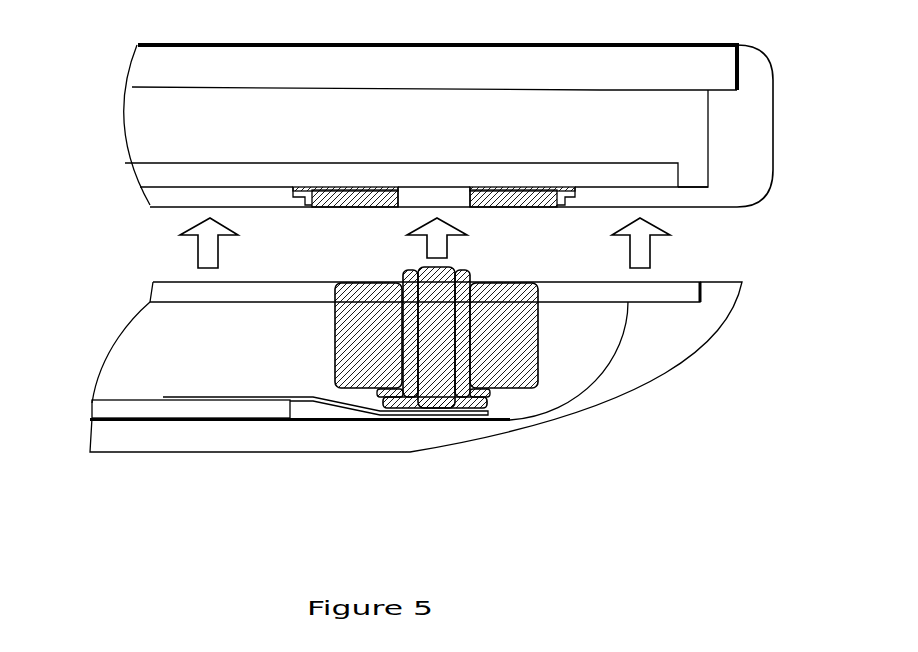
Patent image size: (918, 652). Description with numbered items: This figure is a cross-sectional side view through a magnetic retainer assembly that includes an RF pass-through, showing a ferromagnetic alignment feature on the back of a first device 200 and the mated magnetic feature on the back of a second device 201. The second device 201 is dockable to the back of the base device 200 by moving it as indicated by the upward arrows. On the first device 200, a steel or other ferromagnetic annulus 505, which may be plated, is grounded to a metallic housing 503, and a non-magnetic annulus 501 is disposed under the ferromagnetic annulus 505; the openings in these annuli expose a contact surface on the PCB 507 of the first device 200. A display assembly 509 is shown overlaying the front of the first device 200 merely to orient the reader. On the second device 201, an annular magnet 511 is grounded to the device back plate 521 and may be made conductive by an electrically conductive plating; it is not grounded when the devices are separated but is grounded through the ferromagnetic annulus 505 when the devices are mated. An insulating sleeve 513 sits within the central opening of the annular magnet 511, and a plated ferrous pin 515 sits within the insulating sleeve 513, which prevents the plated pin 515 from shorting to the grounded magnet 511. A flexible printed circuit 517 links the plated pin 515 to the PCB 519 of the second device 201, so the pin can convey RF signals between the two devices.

The first device 200 is at (781, 126).
The second device 201 is at (730, 319).
The non-magnetic annulus 501 is at (542, 190).
The metallic housing 503 is at (150, 202).
The ferromagnetic annulus 505 is at (347, 203).
The PCB 507 is at (140, 172).
The display assembly 509 is at (147, 65).
The annular magnet 511 is at (527, 328).
The insulating sleeve 513 is at (490, 395).
The plated ferrous pin 515 is at (487, 406).
The flexible printed circuit 517 is at (300, 395).
The PCB 519 is at (97, 412).
The device back plate 521 is at (155, 292).